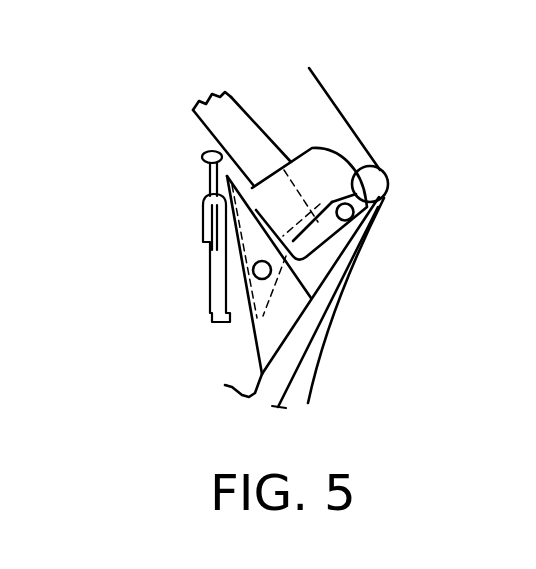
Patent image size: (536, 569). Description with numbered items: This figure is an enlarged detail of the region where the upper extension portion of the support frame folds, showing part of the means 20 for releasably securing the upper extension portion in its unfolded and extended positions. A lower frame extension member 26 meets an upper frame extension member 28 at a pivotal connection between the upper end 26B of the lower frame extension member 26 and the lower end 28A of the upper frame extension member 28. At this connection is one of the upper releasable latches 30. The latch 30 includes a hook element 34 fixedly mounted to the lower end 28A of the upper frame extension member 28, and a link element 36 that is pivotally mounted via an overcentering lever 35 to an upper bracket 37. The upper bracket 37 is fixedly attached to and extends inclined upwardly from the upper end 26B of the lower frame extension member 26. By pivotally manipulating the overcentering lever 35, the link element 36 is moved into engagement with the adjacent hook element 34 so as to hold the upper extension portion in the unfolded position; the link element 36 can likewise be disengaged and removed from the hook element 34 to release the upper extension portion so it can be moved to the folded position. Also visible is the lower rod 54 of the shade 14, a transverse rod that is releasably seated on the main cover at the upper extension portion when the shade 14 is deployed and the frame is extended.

The shade 14 is at (327, 349).
The means for releasably securing 20 is at (123, 226).
The lower frame extension member 26 is at (222, 384).
The upper end of lower frame extension member 26B is at (247, 360).
The upper frame extension member 28 is at (232, 96).
The lower end of upper frame extension member 28A is at (264, 160).
The upper releasable latch 30 is at (192, 268).
The hook element 34 is at (203, 155).
The overcentering lever 35 is at (210, 298).
The link element 36 is at (209, 176).
The upper bracket 37 is at (262, 345).
The lower rod 54 is at (371, 177).